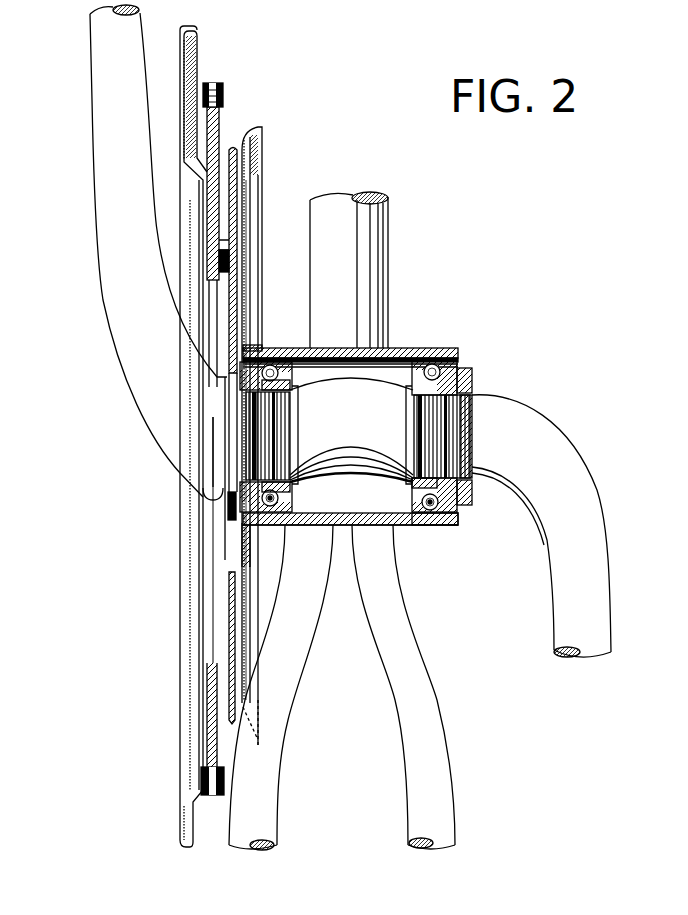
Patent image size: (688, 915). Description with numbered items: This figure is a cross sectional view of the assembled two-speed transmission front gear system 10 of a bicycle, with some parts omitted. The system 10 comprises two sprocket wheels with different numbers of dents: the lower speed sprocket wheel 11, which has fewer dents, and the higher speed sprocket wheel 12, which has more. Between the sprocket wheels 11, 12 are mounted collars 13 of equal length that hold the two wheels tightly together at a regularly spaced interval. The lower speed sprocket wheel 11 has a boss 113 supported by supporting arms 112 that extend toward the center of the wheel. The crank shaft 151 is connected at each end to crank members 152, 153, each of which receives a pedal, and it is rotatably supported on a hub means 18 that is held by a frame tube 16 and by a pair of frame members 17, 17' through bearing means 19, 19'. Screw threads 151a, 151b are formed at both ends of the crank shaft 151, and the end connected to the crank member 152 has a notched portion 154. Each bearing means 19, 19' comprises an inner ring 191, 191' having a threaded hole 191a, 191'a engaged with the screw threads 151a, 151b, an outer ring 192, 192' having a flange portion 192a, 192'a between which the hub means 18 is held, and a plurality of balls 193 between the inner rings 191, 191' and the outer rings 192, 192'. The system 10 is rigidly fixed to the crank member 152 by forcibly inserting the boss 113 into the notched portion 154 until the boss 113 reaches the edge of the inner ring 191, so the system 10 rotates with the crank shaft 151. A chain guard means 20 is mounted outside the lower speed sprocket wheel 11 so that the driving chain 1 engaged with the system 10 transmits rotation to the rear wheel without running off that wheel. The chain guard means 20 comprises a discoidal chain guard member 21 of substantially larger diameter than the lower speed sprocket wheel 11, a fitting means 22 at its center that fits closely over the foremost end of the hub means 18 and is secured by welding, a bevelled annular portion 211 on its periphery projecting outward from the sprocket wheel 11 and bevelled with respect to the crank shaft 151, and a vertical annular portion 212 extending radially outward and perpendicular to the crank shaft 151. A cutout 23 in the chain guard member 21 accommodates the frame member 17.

The driving chain 1 is at (210, 84).
The two-speed transmission front gear system 10 is at (287, 70).
The lower speed sprocket wheel 11 is at (234, 150).
The higher speed sprocket wheel 12 is at (222, 113).
The collar 13 is at (236, 243).
The frame tube 16 is at (370, 243).
The frame member 17 is at (281, 687).
The frame member 17' is at (434, 687).
The hub means 18 is at (435, 352).
The bearing means 19 is at (277, 354).
The bearing means 19' is at (464, 367).
The chain guard means 20 is at (237, 432).
The discoidal chain guard member 21 is at (256, 164).
The fitting means 22 is at (267, 345).
The cutout 23 is at (227, 615).
The supporting arm 112 is at (230, 328).
The boss 113 is at (228, 505).
The crank shaft 151 is at (387, 386).
The screw thread 151a is at (290, 420).
The screw thread 151b is at (472, 384).
The crank member 152 is at (100, 205).
The crank member 153 is at (592, 566).
The notched portion 154 is at (225, 465).
The inner ring 191 is at (209, 448).
The inner ring 191' is at (473, 494).
The threaded hole 191a is at (292, 487).
The threaded hole 191'a is at (395, 446).
The outer ring 192 is at (349, 519).
The outer ring 192' is at (446, 536).
The flange portion 192a is at (240, 518).
The flange portion 192'a is at (475, 506).
The ball 193 is at (292, 506).
The bevelled annular portion 211 is at (219, 471).
The vertical annular portion 212 is at (262, 128).